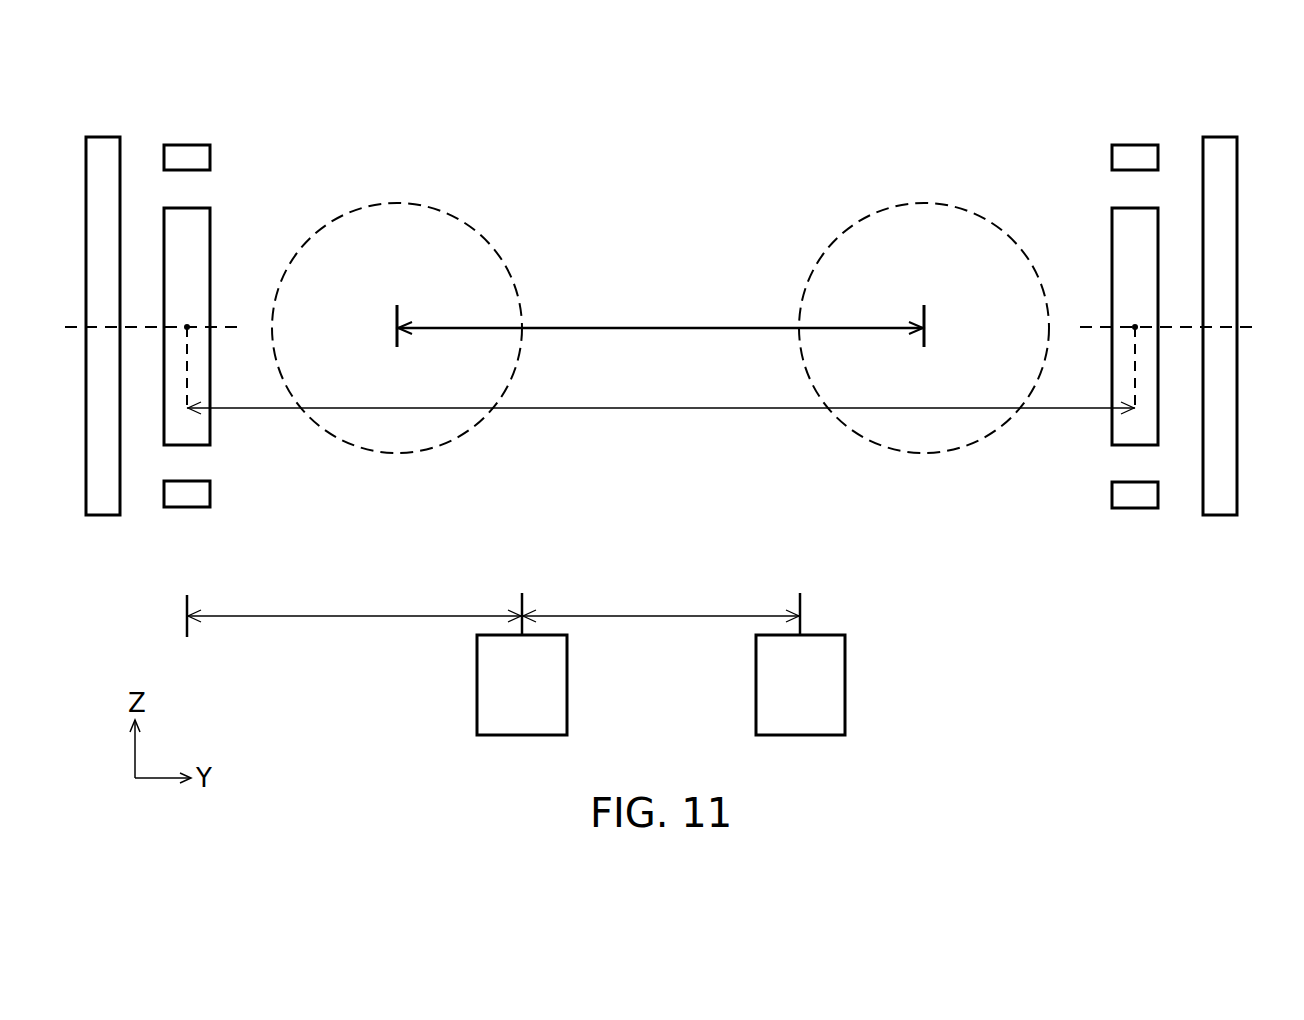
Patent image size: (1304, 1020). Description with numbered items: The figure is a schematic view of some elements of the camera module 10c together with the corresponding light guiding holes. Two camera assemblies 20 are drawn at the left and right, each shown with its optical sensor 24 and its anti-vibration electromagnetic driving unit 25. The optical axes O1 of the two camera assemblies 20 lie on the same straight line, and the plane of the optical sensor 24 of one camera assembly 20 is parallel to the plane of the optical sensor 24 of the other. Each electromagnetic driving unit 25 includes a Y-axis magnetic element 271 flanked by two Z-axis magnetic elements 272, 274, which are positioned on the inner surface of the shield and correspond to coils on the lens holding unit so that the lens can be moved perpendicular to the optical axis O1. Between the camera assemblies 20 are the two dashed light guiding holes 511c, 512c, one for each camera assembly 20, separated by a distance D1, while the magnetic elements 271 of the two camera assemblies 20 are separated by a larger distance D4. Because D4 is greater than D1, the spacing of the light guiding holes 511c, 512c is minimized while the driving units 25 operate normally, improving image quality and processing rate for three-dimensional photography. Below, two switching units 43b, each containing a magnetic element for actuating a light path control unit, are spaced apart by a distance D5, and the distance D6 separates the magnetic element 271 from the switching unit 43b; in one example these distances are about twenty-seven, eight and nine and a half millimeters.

The camera module 10c is at (80, 100).
The camera assembly 20 is at (74, 184).
The optical sensor 24 is at (94, 376).
The anti-vibration electromagnetic driving unit 25 is at (178, 134).
The Z-axis magnetic element 272 is at (205, 157).
The Y-axis magnetic element 271 is at (203, 238).
The Z-axis magnetic element 274 is at (203, 494).
The optical axis O1 is at (661, 361).
The light guiding hole 511c is at (398, 202).
The light guiding hole 512c is at (925, 202).
The switching unit 43b is at (553, 688).
The distance between light guiding holes D1 is at (670, 326).
The distance between magnetic elements D4 is at (670, 407).
The distance between switching unit magnetic elements D5 is at (662, 616).
The distance between magnetic element and switching unit D6 is at (355, 616).